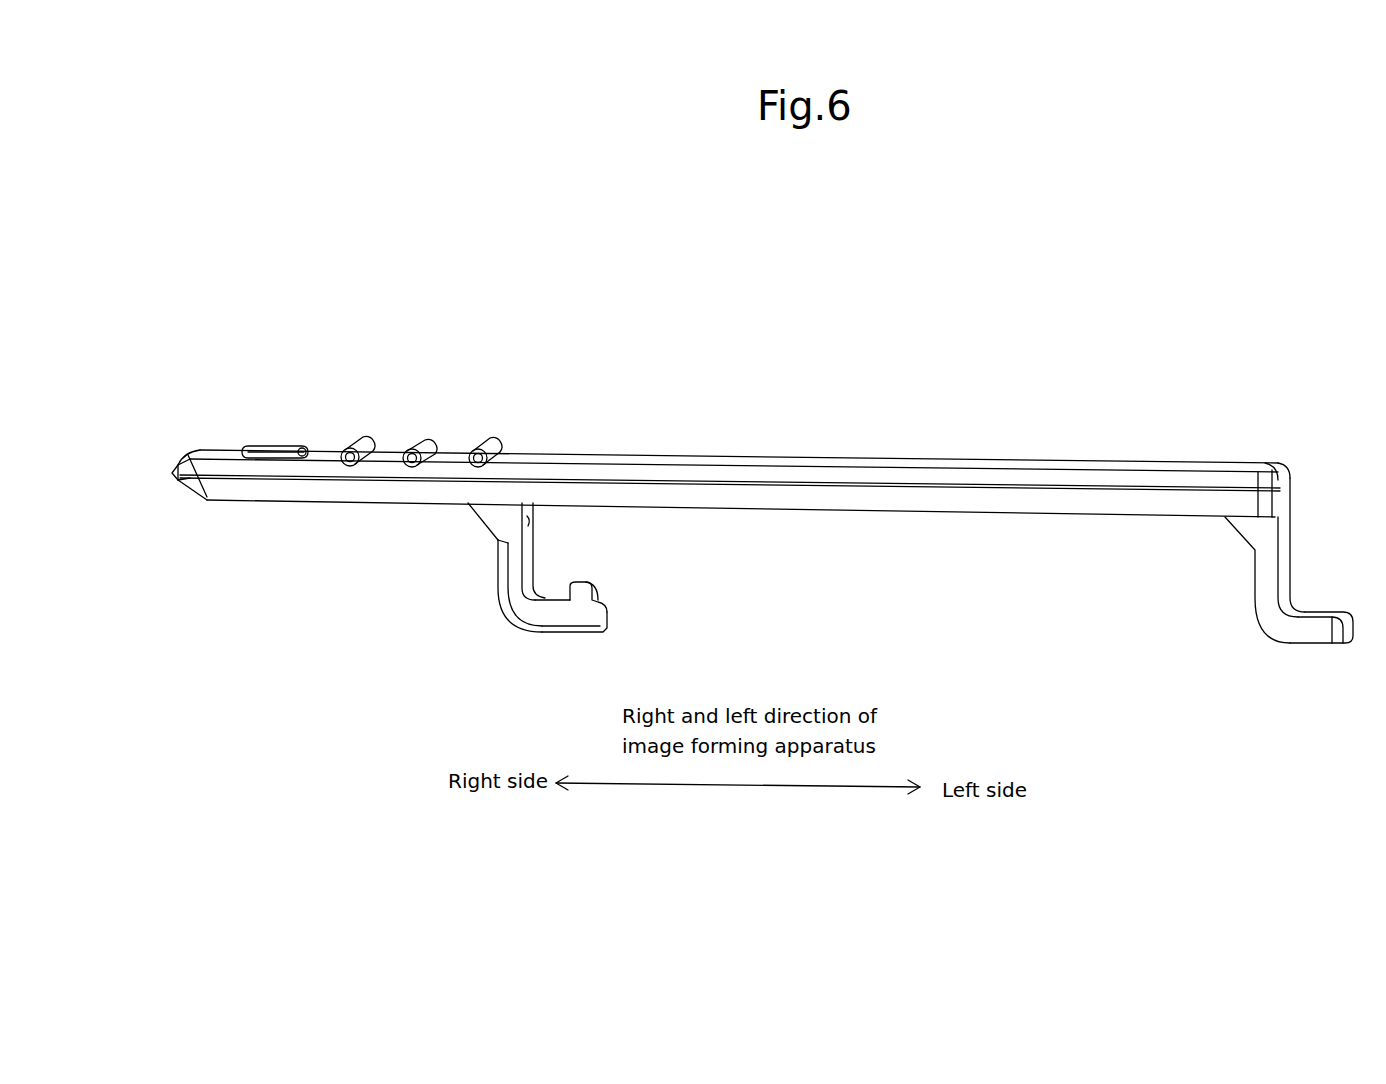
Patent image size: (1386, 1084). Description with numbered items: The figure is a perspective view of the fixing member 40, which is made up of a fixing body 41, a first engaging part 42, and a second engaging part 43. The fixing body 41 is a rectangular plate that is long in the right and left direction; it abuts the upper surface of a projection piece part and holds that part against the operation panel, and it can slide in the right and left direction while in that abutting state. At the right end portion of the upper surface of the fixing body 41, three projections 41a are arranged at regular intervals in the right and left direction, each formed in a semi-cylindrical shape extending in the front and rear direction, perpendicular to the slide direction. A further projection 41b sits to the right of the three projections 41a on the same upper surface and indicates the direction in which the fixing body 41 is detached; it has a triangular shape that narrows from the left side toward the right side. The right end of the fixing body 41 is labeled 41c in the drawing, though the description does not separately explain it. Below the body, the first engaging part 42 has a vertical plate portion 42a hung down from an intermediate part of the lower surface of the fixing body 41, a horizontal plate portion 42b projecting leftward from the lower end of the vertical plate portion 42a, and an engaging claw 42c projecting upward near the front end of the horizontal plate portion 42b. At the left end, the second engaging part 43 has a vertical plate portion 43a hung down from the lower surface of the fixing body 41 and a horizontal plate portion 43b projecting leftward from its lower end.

The fixing member 40 is at (338, 423).
The fixing body 41 is at (640, 458).
The projections 41a is at (492, 441).
The projection 41b is at (276, 446).
The end portion 41c is at (188, 487).
The first engaging part 42 is at (495, 623).
The vertical plate portion 42a is at (513, 560).
The horizontal plate portion 42b is at (555, 612).
The engaging claw 42c is at (597, 590).
The second engaging part 43 is at (1245, 635).
The vertical plate portion 43a is at (1262, 575).
The horizontal plate portion 43b is at (1310, 633).